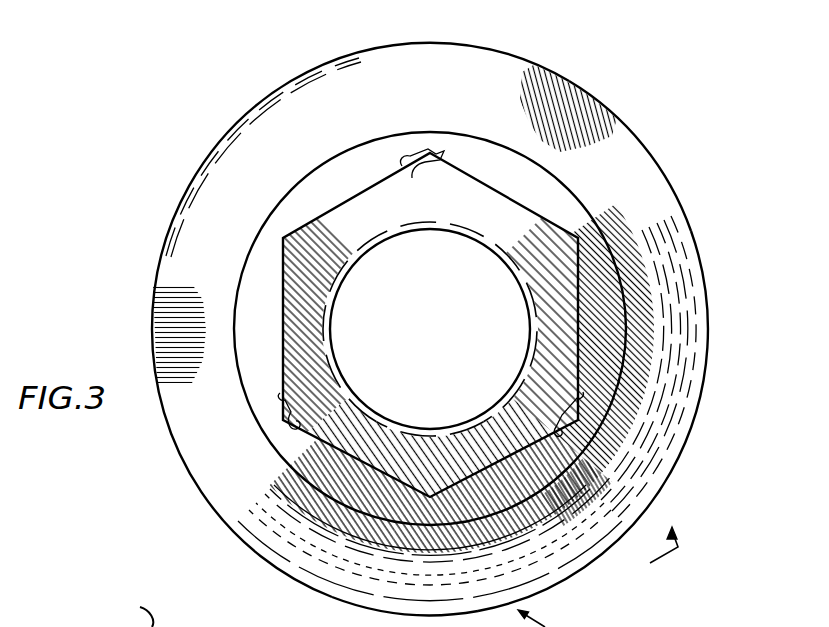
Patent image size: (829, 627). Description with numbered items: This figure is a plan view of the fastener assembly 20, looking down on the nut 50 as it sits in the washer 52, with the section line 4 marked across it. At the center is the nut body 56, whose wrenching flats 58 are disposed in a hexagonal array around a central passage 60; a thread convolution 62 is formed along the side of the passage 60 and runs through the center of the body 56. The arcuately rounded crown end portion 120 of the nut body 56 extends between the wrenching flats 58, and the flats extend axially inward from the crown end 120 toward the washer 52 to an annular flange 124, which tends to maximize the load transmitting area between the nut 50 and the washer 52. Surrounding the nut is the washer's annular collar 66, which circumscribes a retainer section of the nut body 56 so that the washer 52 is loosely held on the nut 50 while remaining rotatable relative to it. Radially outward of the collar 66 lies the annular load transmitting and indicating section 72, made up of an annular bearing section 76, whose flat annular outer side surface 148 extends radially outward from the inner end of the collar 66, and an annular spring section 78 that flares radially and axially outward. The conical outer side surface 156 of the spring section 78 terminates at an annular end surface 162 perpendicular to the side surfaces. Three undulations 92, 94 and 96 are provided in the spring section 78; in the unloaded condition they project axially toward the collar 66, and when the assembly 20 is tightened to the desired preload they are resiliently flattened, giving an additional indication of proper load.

The fastener assembly 20 is at (112, 217).
The nut 50 is at (296, 183).
The washer 52 is at (672, 160).
The body 56 is at (358, 185).
The wrenching flats 58 is at (583, 392).
The central passage 60 is at (452, 351).
The thread convolution 62 is at (375, 242).
The annular collar 66 is at (57, 626).
The load transmitting and indicating section 72 is at (715, 296).
The annular bearing section 76 is at (633, 276).
The annular spring section 78 is at (683, 350).
The undulation 92 is at (594, 562).
The undulation 94 is at (165, 324).
The undulation 96 is at (577, 97).
The crown end portion 120 is at (437, 440).
The annular flange 124 is at (320, 472).
The outer side surface 148 is at (364, 536).
The outer side surface 156 is at (682, 432).
The annular end surface 162 is at (180, 455).
The section line 4- 4 is at (598, 567).